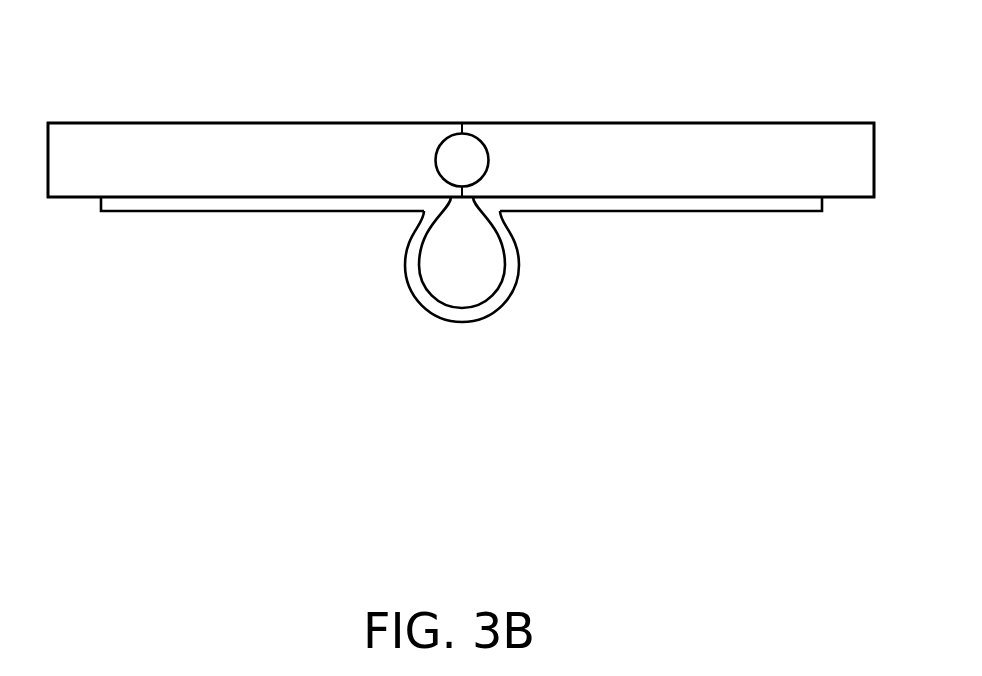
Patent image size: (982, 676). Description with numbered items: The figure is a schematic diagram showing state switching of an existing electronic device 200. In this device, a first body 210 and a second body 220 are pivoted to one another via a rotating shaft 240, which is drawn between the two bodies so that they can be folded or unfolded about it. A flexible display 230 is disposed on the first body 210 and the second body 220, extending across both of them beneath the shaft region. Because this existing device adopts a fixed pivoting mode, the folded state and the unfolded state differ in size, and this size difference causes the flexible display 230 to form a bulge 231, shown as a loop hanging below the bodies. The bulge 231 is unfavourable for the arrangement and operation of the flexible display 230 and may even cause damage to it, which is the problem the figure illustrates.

The electronic device 200 is at (841, 582).
The first body 210 is at (83, 129).
The second body 220 is at (733, 138).
The flexible display 230 is at (740, 203).
The bulge 231 is at (408, 311).
The rotating shaft 240 is at (472, 148).